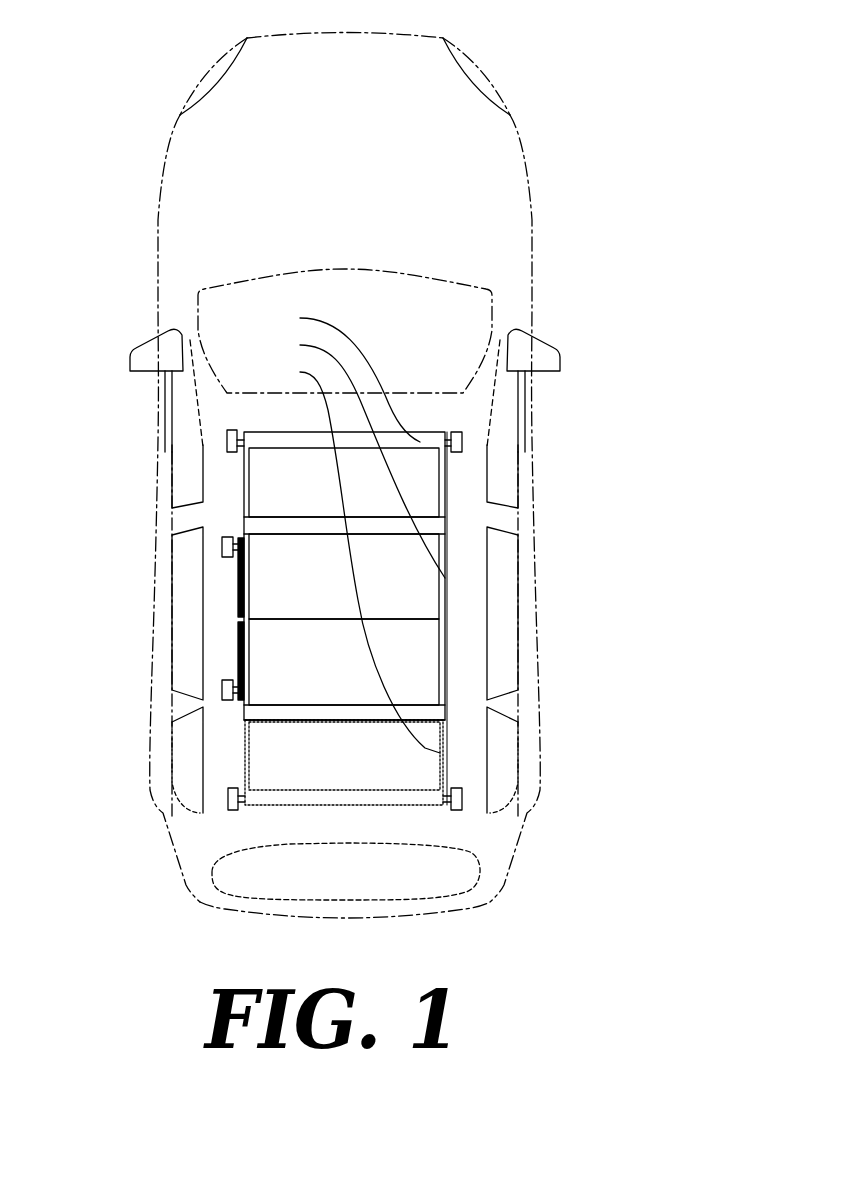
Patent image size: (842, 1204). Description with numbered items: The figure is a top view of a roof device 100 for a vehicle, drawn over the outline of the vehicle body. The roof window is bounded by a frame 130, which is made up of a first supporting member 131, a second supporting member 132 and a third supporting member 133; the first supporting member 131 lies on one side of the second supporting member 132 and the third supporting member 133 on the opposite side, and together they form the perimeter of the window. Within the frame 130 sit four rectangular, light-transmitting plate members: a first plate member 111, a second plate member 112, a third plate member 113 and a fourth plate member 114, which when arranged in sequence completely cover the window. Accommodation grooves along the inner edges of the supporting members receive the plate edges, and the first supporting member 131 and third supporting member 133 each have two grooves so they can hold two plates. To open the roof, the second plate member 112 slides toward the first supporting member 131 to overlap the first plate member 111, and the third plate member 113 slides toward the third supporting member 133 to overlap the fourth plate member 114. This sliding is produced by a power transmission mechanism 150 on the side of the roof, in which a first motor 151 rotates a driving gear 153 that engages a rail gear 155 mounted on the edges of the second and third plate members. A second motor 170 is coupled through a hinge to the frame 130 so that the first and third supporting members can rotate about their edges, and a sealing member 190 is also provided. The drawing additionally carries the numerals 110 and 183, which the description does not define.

The roof device 100 is at (63, 45).
The battery pack 110 is at (605, 508).
The first plate member 111 is at (430, 504).
The second plate member 112 is at (430, 586).
The third plate member 113 is at (430, 667).
The fourth plate member 114 is at (430, 736).
The frame 130 is at (250, 300).
The first supporting member 131 is at (339, 371).
The second supporting member 132 is at (351, 453).
The third supporting member 133 is at (345, 553).
The power transmission mechanism 150 is at (95, 530).
The first motor 151 is at (222, 544).
The driving gear 153 is at (240, 552).
The rail gear 155 is at (240, 597).
The second motor 170 is at (228, 441).
The mounting bracket 183 is at (462, 446).
The sealing member 190 is at (273, 527).